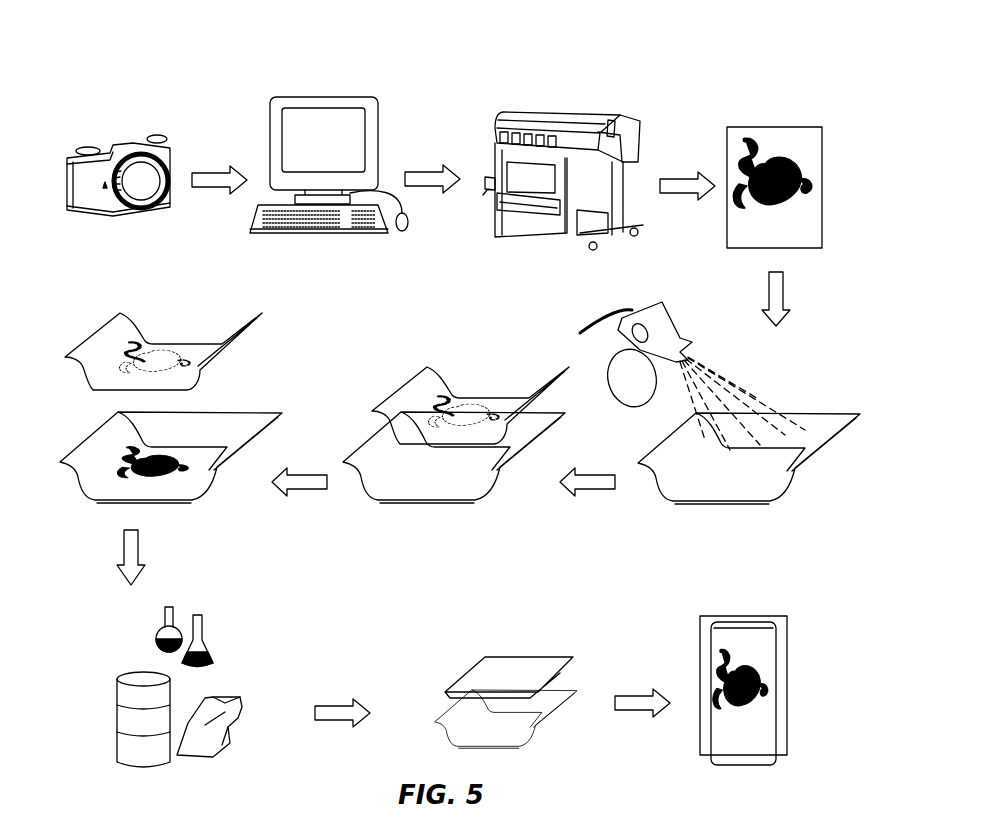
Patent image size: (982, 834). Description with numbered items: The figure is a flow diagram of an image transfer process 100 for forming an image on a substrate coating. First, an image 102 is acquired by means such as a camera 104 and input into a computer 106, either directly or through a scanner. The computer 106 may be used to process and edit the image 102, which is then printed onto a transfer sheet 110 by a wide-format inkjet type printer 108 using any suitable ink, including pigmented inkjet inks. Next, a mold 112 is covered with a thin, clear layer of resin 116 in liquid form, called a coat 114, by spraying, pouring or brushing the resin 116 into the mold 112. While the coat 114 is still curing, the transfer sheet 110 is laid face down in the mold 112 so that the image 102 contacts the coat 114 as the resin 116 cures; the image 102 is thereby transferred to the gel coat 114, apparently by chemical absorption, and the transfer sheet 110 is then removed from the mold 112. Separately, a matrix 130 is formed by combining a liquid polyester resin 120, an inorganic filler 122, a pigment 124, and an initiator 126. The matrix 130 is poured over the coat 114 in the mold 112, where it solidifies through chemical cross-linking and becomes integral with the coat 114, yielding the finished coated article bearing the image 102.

The image transfer process 100 is at (113, 72).
The image 102 is at (800, 175).
The camera 104 is at (63, 212).
The computer 106 is at (378, 112).
The wide-format inkjet type printer 108 is at (590, 122).
The transfer sheet 110 is at (788, 127).
The mold 112 is at (695, 500).
The coat 114 is at (760, 477).
The resin 116 is at (723, 387).
The polyester resin 120 is at (122, 693).
The inorganic filler 122 is at (232, 732).
The pigment 124 is at (210, 645).
The initiator 126 is at (163, 620).
The matrix 130 is at (533, 653).